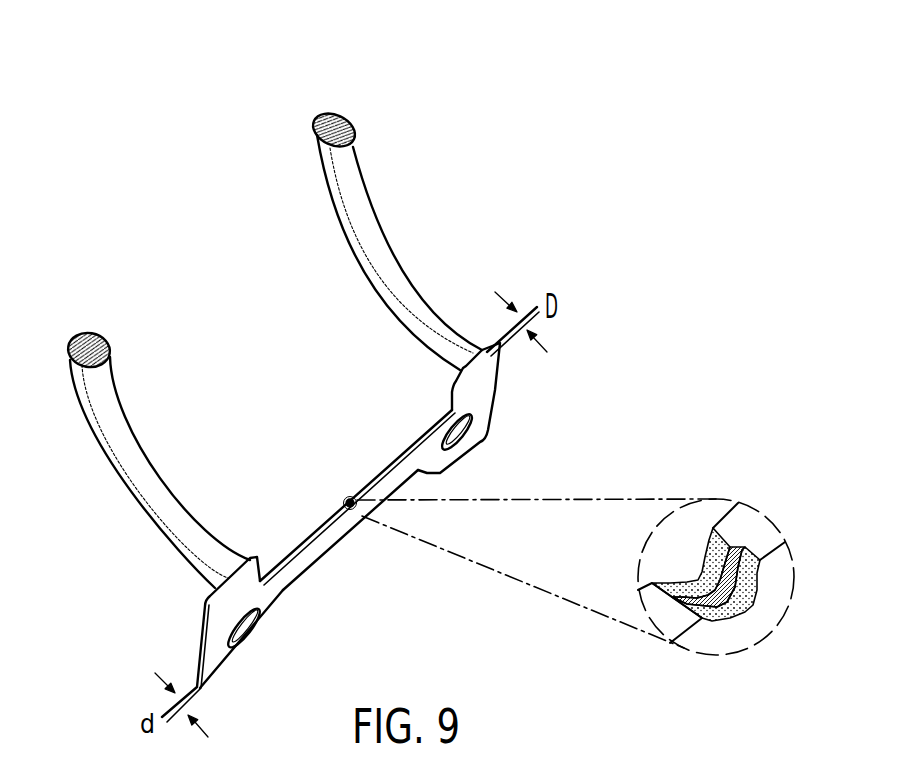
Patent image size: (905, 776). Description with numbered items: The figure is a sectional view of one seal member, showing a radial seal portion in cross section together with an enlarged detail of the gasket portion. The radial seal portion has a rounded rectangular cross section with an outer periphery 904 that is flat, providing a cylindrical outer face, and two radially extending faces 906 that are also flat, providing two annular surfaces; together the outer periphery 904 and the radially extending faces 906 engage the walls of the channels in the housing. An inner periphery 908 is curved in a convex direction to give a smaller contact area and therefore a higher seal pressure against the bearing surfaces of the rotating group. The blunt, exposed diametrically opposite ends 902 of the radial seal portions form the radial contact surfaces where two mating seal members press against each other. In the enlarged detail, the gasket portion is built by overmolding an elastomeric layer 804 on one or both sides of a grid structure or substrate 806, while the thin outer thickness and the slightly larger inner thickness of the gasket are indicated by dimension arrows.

The exposed diametrically opposite ends 902 is at (243, 580).
The outer periphery 904 is at (318, 107).
The radially extending faces 906 is at (349, 118).
The inner periphery 908 is at (352, 150).
The elastomeric layer 804 is at (752, 585).
The grid structure or substrate 806 is at (733, 543).